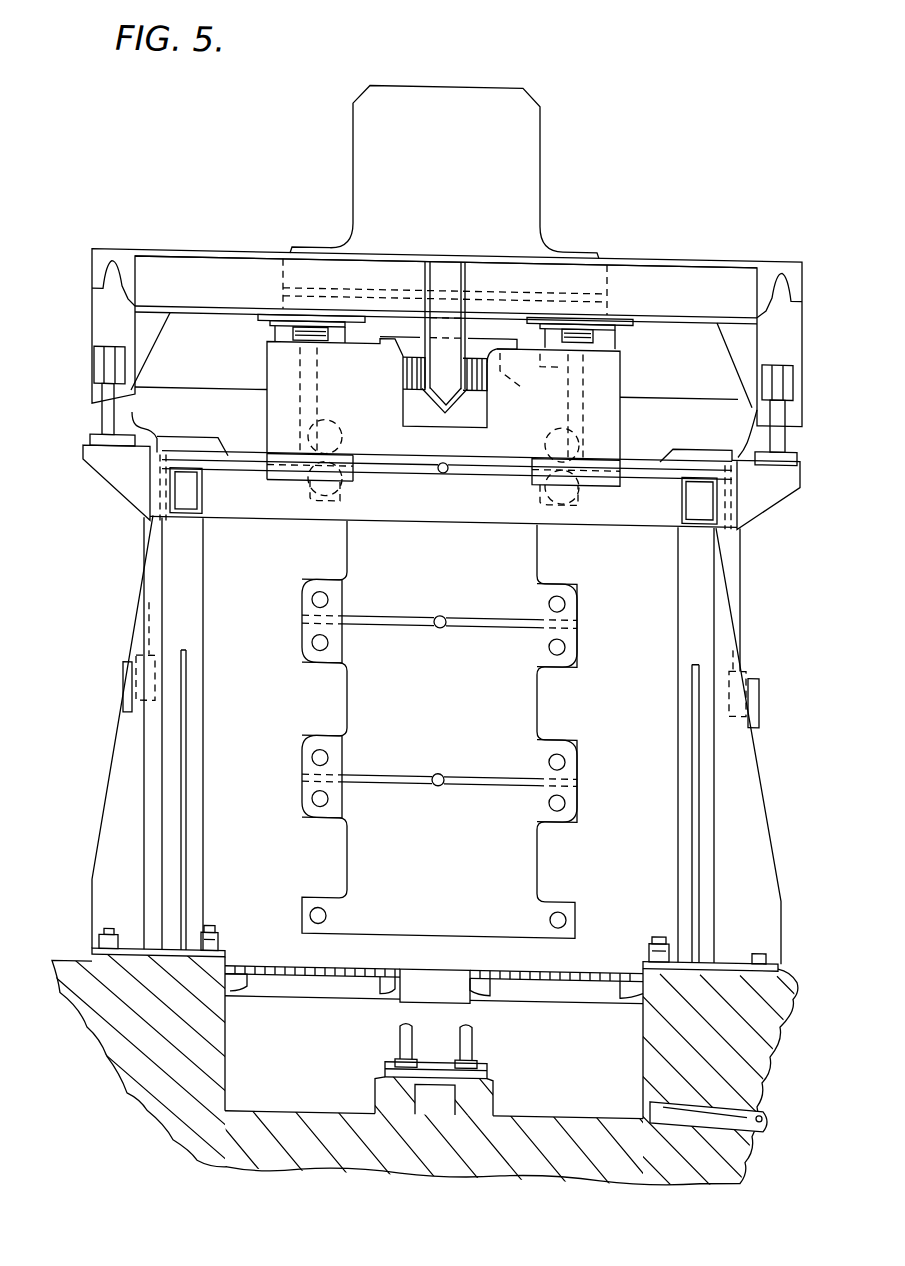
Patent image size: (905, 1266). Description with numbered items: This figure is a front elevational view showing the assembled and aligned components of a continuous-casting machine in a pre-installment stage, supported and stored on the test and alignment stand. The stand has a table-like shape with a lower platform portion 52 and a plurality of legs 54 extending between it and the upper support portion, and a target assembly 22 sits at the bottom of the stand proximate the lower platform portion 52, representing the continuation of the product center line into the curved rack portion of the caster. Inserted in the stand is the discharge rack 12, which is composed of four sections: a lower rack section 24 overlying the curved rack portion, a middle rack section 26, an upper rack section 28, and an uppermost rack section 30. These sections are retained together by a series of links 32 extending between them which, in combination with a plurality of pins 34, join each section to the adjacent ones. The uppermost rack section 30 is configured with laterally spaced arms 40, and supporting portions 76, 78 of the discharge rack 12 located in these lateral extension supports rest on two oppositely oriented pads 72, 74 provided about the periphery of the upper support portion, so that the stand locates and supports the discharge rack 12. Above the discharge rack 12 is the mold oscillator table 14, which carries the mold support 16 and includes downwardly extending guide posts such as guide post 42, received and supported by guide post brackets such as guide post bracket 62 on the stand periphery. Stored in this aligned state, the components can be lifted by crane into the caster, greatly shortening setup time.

The discharge rack 12 is at (545, 556).
The mold oscillator table 14 is at (688, 262).
The mold support 16 is at (548, 151).
The target assembly 22 is at (478, 1047).
The lower rack section 24 is at (452, 857).
The middle rack section 26 is at (452, 727).
The upper rack section 28 is at (452, 573).
The uppermost rack section 30 is at (385, 426).
The links 32 is at (312, 634).
The pins 34 is at (312, 603).
The laterally spaced arms 40 is at (255, 428).
The guide post 42 is at (458, 402).
The lower platform portion 52 is at (737, 938).
The legs 54 is at (166, 749).
The guide post bracket 62 is at (492, 364).
The pad 72 is at (200, 454).
The pad 74 is at (722, 462).
The supporting portion 76 is at (180, 443).
The supporting portion 78 is at (703, 445).